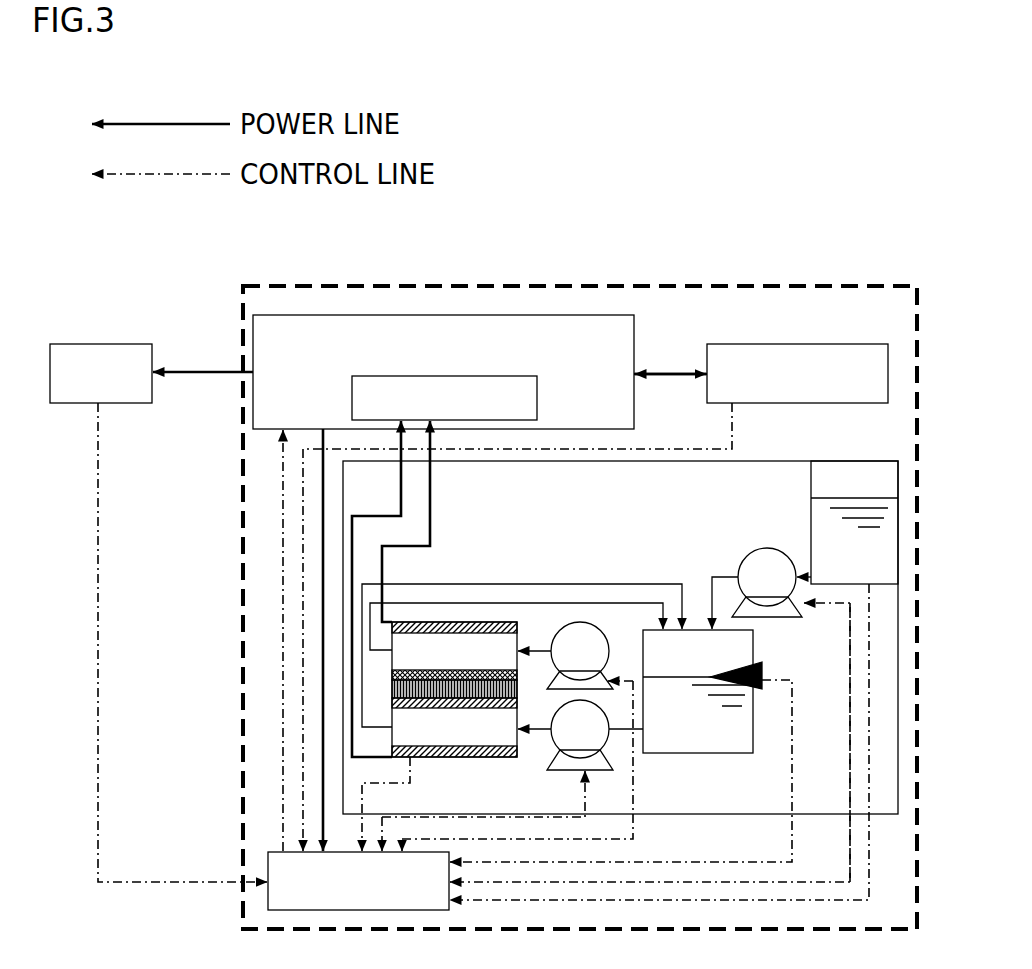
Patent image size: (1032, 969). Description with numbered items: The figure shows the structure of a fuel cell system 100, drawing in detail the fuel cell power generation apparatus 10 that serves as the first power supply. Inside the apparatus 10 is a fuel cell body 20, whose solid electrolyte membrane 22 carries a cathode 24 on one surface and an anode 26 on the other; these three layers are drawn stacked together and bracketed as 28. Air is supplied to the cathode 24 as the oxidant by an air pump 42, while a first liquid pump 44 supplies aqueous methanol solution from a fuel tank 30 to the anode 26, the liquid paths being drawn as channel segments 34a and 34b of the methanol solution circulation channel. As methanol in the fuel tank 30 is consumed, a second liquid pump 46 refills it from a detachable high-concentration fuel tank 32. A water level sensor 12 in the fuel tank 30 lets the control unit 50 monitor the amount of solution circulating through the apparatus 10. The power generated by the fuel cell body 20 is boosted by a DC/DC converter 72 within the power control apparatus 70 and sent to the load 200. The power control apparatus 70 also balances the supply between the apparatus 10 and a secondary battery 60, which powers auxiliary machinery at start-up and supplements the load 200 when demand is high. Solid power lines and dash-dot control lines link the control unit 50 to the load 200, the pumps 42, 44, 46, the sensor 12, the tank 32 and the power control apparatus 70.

The fuel cell system 100 is at (867, 122).
The load 200 is at (82, 344).
The power control apparatus 70 is at (372, 315).
The DC/DC converter 72 is at (352, 388).
The secondary battery 60 is at (818, 344).
The fuel cell power generation apparatus 10 is at (342, 527).
The high-concentration fuel tank 32 is at (858, 490).
The liquid pump (second liquid pump) 46 is at (752, 567).
The fuel tank 30 is at (723, 727).
The water level sensor 12 is at (772, 667).
The discharge pipe 34b is at (428, 603).
The supply pipe 34a is at (547, 740).
The air pump 42 is at (598, 628).
The liquid pump (first liquid pump) 44 is at (568, 703).
The fuel cell body 20 is at (312, 684).
The membrane electrode assembly 28 is at (312, 641).
The cathode 24 is at (392, 671).
The solid electrolyte membrane 22 is at (392, 688).
The anode 26 is at (392, 703).
The control unit 50 is at (263, 863).